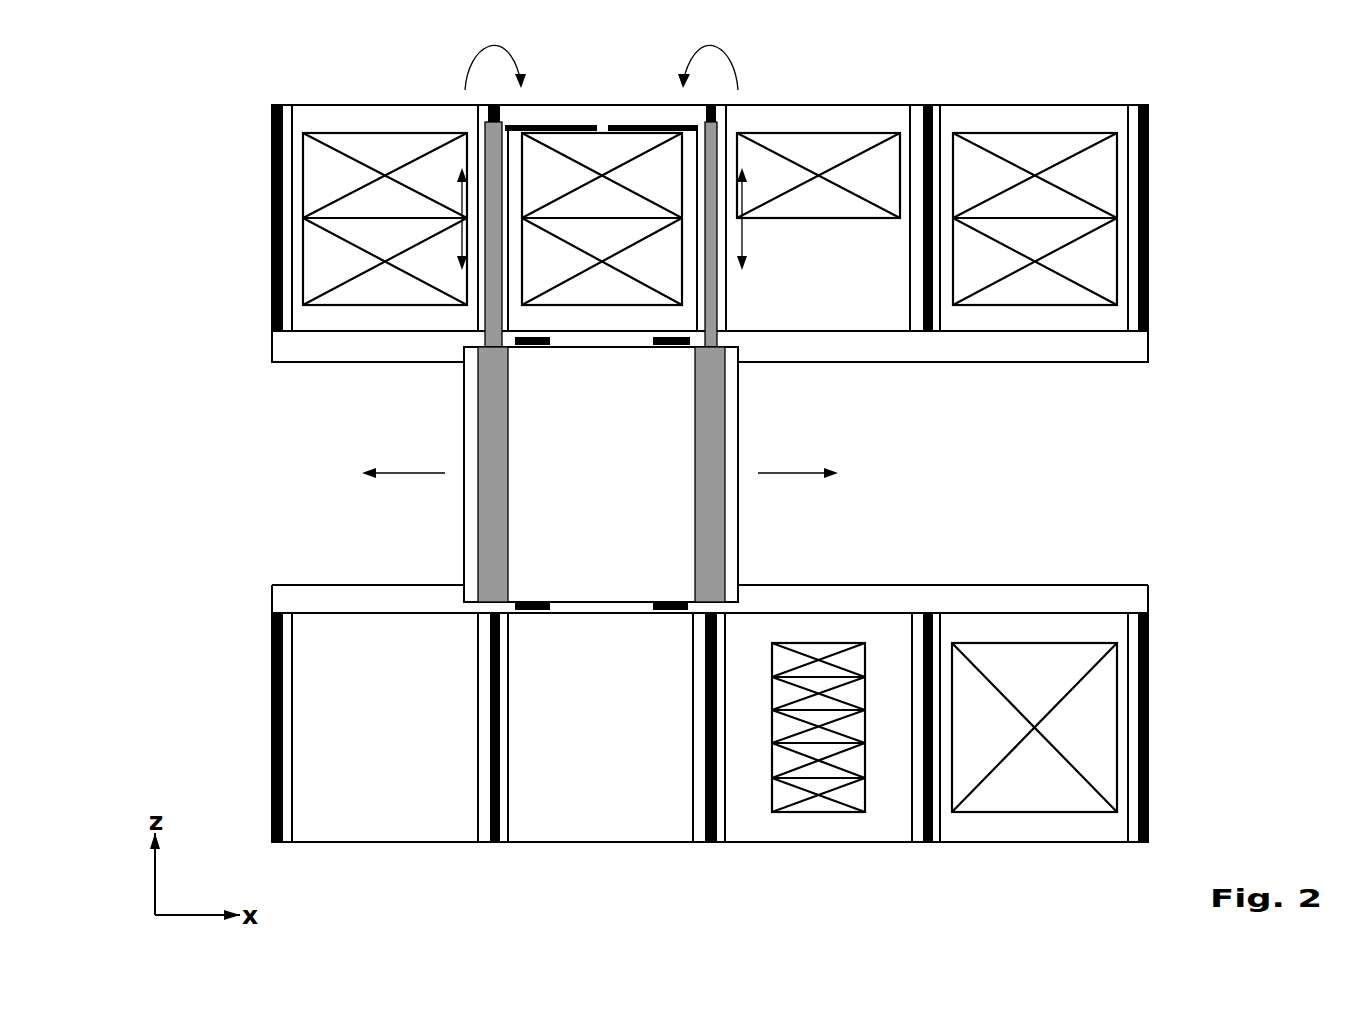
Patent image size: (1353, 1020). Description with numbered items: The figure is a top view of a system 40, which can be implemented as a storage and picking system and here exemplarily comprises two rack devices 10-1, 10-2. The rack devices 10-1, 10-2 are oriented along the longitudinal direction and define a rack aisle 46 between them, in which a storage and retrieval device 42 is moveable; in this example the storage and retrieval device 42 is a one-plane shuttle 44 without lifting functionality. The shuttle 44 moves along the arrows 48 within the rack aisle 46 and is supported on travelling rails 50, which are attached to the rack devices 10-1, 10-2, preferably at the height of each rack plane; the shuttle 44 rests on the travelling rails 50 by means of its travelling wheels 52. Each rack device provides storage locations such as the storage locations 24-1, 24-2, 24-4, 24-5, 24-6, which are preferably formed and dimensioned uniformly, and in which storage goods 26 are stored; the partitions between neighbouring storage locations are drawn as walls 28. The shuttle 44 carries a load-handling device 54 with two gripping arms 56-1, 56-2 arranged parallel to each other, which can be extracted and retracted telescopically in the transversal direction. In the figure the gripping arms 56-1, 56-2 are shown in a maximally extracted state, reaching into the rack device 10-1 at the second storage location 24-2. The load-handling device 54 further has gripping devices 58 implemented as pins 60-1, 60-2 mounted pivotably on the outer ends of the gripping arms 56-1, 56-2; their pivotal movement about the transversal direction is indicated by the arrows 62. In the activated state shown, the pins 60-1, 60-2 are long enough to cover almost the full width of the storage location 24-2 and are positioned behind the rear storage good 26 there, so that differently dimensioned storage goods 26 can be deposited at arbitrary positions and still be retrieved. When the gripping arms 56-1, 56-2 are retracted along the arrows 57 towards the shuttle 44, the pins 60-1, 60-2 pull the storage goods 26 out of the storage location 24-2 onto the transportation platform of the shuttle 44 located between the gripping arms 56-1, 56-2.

The system 40 is at (200, 178).
The rack device 10-1 is at (1194, 218).
The rack device 10-2 is at (1196, 728).
The storage location 24-1 is at (363, 108).
The second storage location 24-2 is at (602, 330).
The storage location 24-4 is at (1013, 108).
The storage location 24-5 is at (366, 742).
The storage location 24-6 is at (581, 742).
The storage goods 26 is at (818, 815).
The module wall 28 is at (303, 123).
The storage and retrieval device 42 is at (535, 517).
The shuttle 44 is at (450, 417).
The rack aisle 46 is at (979, 490).
The arrows 48 is at (410, 473).
The travelling rails 50 is at (1090, 363).
The travelling wheels 52 is at (535, 610).
The load-handling device 54 is at (458, 562).
The gripping arm 56-1 is at (470, 320).
The gripping arm 56-2 is at (732, 320).
The arrows 57 is at (455, 240).
The gripping device 58 is at (620, 40).
The pin 60-1 is at (563, 125).
The pin 60-2 is at (645, 125).
The arrows 62 is at (490, 35).